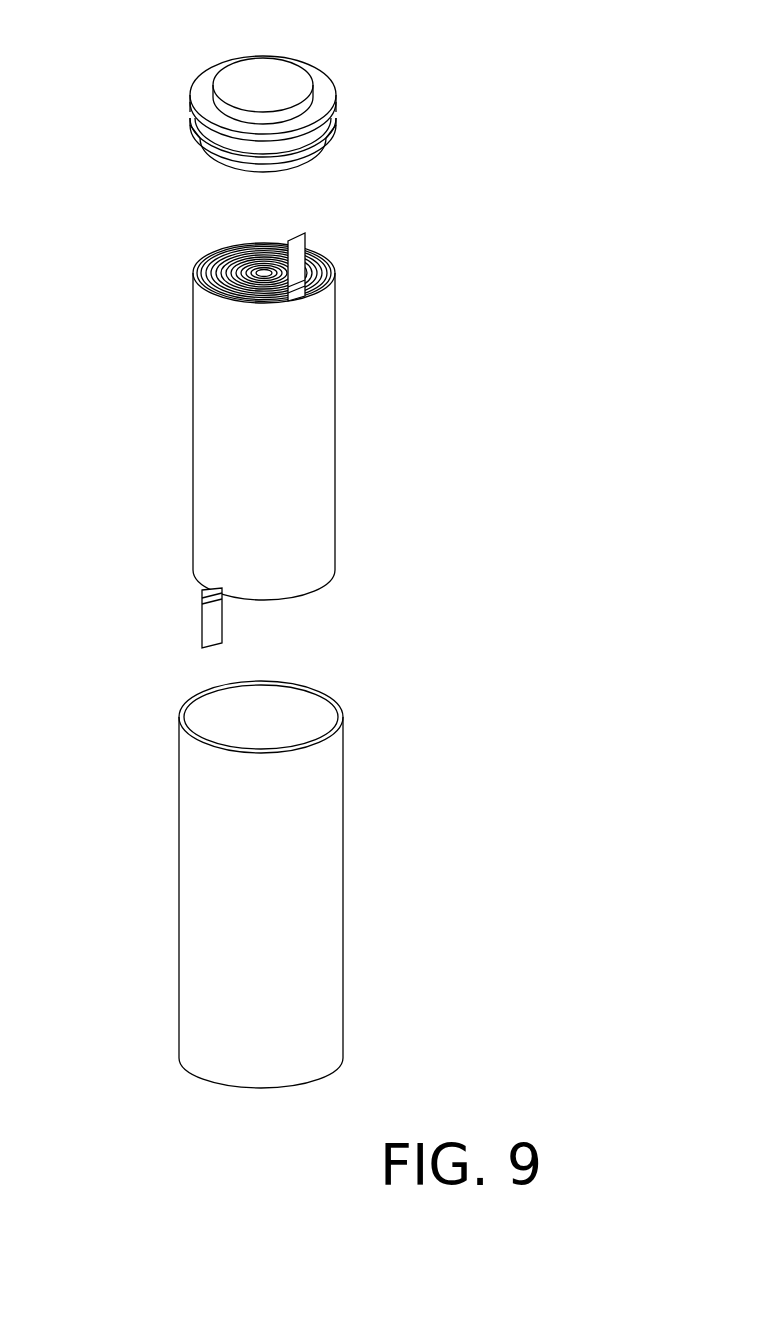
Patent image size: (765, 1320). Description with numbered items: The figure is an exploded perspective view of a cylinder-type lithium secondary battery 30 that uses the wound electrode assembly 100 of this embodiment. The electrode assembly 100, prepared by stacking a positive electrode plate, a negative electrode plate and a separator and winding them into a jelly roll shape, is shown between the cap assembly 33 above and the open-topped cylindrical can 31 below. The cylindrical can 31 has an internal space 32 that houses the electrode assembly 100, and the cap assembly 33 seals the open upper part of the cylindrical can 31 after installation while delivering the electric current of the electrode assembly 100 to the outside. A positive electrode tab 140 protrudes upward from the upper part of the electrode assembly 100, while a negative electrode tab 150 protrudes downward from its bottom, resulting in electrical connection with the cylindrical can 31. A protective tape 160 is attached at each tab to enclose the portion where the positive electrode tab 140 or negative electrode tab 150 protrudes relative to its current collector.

The secondary battery 30 is at (72, 68).
The cylindrical can 31 is at (289, 867).
The internal space 32 is at (333, 728).
The cap assembly 33 is at (358, 95).
The electrode assembly 100 is at (358, 401).
The positive electrode tab 140 is at (300, 244).
The negative electrode tab 150 is at (208, 620).
The protective tape 160 is at (298, 291).